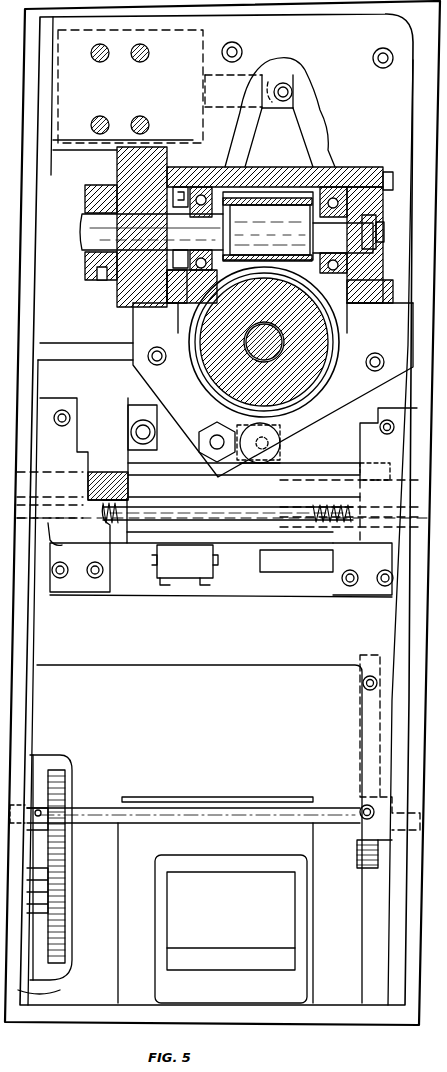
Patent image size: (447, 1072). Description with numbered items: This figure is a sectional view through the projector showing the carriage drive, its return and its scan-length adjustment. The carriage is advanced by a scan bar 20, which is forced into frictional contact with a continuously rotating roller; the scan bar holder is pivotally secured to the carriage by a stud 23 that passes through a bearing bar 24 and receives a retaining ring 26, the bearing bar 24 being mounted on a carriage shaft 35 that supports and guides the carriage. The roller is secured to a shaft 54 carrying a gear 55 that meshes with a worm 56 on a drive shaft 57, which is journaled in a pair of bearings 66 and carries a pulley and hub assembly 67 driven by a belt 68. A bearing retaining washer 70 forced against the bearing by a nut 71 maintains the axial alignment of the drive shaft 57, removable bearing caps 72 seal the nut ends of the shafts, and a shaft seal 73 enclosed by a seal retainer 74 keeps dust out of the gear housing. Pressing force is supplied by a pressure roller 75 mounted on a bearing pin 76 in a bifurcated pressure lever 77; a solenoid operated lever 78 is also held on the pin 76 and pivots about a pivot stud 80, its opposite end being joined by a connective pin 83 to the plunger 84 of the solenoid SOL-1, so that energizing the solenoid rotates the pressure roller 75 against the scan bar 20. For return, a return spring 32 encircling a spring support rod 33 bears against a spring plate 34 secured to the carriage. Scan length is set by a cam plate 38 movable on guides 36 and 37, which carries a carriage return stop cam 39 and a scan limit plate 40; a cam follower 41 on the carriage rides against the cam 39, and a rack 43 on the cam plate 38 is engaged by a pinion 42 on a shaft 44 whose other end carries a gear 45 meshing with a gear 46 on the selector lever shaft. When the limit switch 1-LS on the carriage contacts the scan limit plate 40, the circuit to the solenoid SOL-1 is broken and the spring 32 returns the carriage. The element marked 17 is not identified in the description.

The solenoid SOL-1 is at (66, 126).
The solenoid operated lever 78 is at (262, 135).
The plunger 84 is at (265, 78).
The connective pin 83 is at (280, 112).
The bearing caps 72 is at (385, 300).
The bearing retaining washer 70 is at (385, 200).
The nut 71 is at (376, 224).
The belt 68 is at (118, 315).
The pulley and hub assembly 67 is at (113, 290).
The drive shaft 57 is at (80, 233).
The worm 56 is at (258, 192).
The bearings 66 is at (212, 214).
The shaft seal 73 is at (175, 198).
The seal retainer 74 is at (178, 305).
The gear 55 is at (339, 330).
The shaft 54 is at (284, 327).
The scan bar 20 is at (360, 410).
The scan limit plate 40 is at (84, 390).
The retaining ring 26 is at (148, 405).
The stud 23 is at (134, 428).
The bearing bar 24 is at (133, 440).
The carriage shaft 35 is at (100, 478).
The carriage return stop cam 39 is at (362, 433).
The pivot stud 80 is at (198, 445).
The pressure roller 75 is at (282, 447).
The pressure lever 77 is at (282, 457).
The bearing pin 76 is at (258, 442).
The spring plate 34 is at (223, 501).
The return spring 32 is at (118, 530).
The spring support rod 33 is at (60, 532).
The cam follower 41 is at (292, 575).
The limit switch 1-LS is at (158, 572).
The guide 37 is at (40, 612).
The guide 36 is at (395, 625).
The cam plate 38 is at (213, 652).
The rack 43 is at (358, 662).
The shaft 44 is at (330, 803).
The pinion 42 is at (355, 853).
The gear 46 is at (65, 935).
The gear 45 is at (68, 805).
The frame 17 is at (445, 538).